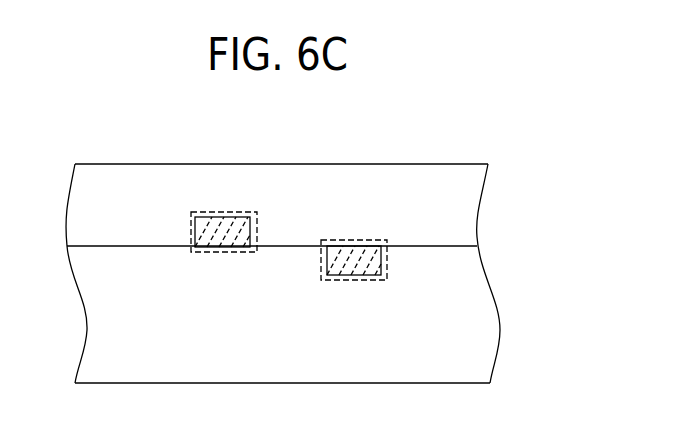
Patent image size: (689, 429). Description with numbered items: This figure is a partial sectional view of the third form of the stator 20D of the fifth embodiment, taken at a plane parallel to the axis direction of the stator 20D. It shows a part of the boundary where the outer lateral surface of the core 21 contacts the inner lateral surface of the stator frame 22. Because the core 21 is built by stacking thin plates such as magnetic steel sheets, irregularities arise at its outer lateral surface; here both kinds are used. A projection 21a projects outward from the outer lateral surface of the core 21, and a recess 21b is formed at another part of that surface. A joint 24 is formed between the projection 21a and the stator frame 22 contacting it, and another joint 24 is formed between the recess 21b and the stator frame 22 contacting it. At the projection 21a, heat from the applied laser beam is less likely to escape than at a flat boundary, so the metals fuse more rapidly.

The stator 20D is at (313, 232).
The stator frame 22 is at (465, 215).
The core 21 is at (473, 330).
The projection 21a is at (208, 262).
The recess 21b is at (348, 285).
The joint 24 is at (225, 210).